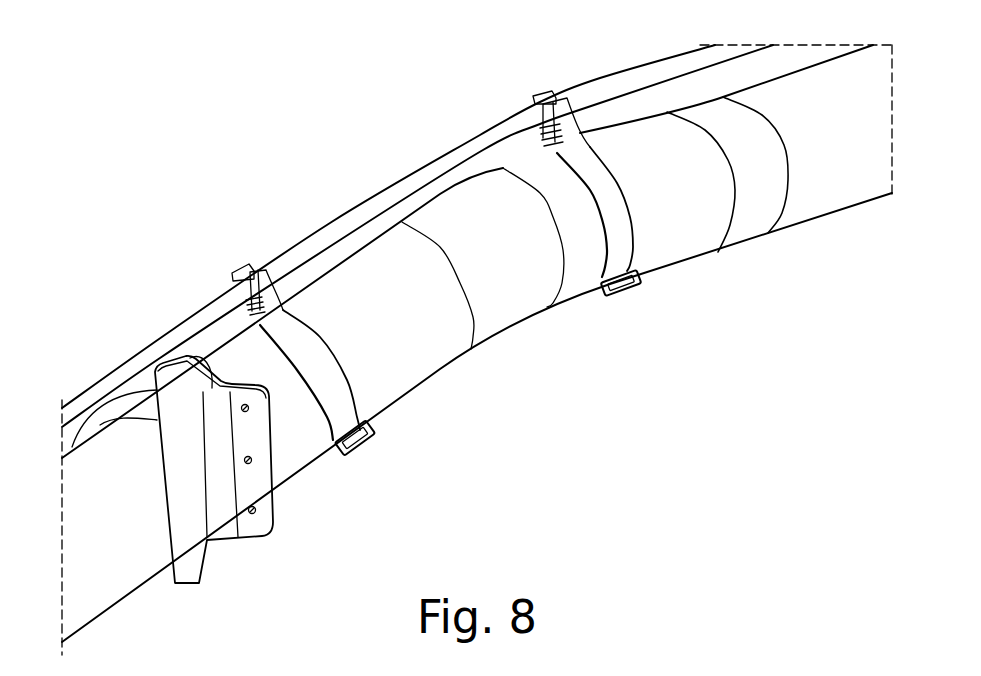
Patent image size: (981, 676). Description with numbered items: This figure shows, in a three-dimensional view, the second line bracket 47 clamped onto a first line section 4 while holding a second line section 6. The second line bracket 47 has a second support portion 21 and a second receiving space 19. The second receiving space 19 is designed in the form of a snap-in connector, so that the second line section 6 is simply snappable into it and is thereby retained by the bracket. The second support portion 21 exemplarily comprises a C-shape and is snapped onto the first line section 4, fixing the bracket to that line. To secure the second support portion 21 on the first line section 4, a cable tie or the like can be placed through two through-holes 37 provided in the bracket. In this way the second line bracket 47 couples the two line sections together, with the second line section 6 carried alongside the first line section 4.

The first line section 4 is at (430, 353).
The second line section 6 is at (457, 158).
The second receiving space 19 is at (542, 85).
The second support portion 21 is at (343, 395).
The through-holes 37 is at (354, 455).
The second line bracket 47 is at (333, 322).